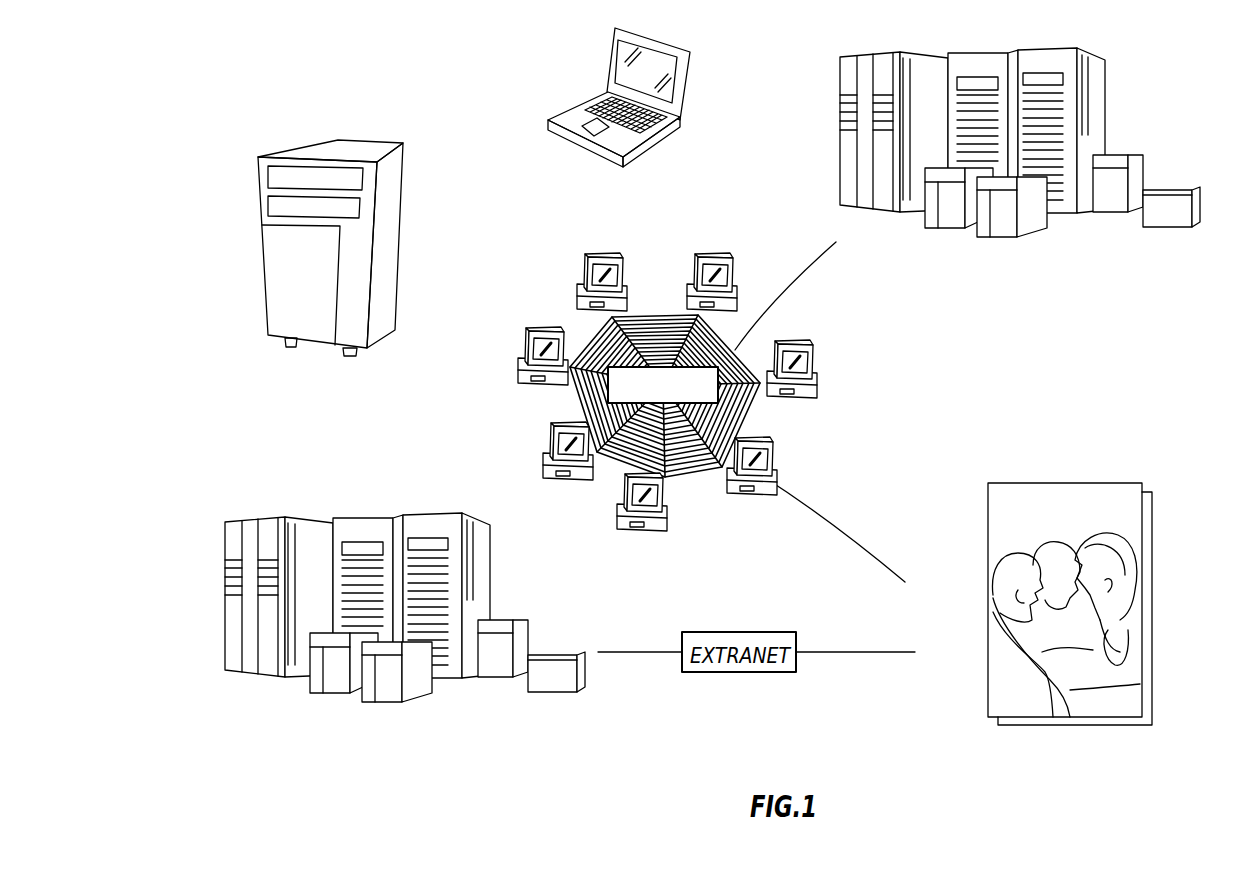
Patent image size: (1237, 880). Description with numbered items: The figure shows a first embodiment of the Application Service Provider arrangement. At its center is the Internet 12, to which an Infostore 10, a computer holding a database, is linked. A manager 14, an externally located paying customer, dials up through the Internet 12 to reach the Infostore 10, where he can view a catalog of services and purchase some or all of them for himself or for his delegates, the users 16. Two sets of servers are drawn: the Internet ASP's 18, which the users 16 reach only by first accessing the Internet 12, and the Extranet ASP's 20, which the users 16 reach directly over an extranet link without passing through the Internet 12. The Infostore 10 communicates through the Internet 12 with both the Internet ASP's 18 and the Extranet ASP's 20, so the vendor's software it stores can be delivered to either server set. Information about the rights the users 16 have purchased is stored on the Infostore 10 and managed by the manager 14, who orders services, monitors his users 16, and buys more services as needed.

The Infostore 10 is at (292, 147).
The Internet 12 is at (570, 402).
The manager 14 is at (570, 113).
The users 16 is at (1102, 482).
The Internet ASP's 18 is at (1105, 112).
The Extranet ASP's 20 is at (250, 520).